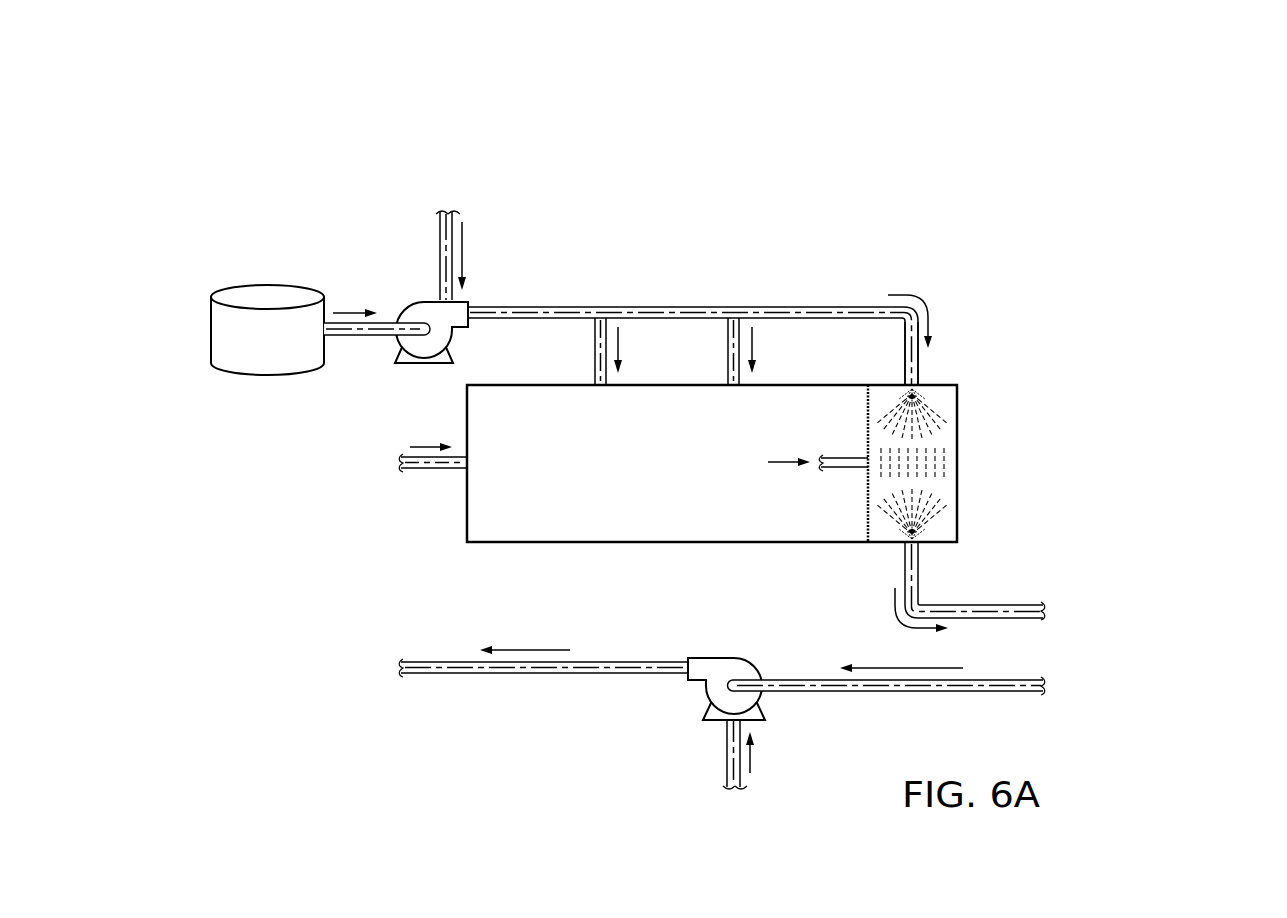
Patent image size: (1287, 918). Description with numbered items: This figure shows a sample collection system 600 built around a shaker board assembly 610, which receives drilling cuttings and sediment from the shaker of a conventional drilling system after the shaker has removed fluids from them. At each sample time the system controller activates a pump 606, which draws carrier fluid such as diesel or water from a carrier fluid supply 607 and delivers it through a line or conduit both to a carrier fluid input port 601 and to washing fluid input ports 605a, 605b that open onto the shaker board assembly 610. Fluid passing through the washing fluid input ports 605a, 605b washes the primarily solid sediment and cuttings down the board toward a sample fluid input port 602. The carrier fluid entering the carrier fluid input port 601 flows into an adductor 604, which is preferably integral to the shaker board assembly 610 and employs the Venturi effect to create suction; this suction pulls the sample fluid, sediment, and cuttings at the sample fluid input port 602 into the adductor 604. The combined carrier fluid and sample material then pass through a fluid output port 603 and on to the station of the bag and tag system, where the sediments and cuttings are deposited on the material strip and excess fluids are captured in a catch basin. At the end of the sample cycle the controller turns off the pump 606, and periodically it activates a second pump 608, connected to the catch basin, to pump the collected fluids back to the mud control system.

The sample collection system 600 is at (912, 182).
The carrier fluid input port 601 is at (903, 381).
The sample fluid input port 602 is at (848, 469).
The fluid output port 603 is at (923, 547).
The adductor 604 is at (866, 426).
The washing fluid input port 605a is at (592, 381).
The washing fluid input port 605b is at (725, 381).
The pump 606 is at (412, 302).
The carrier fluid tank 607 is at (268, 283).
The pump 608 is at (710, 657).
The shaker board assembly 610 is at (455, 516).